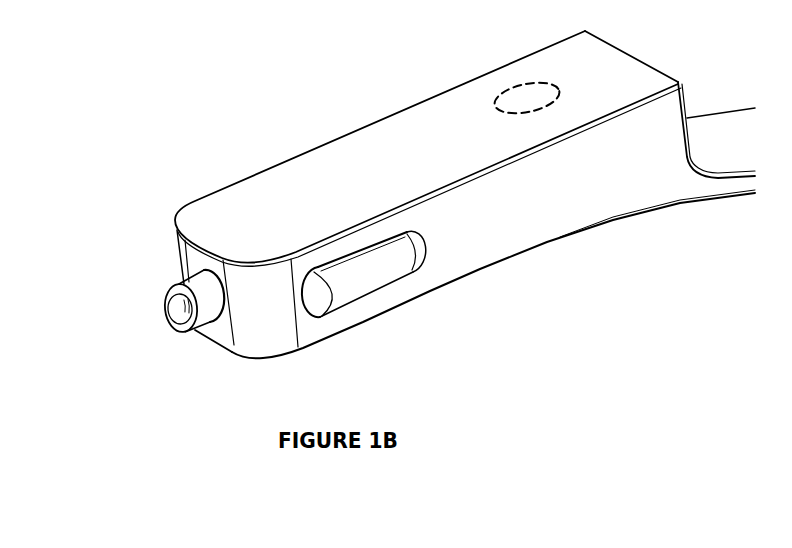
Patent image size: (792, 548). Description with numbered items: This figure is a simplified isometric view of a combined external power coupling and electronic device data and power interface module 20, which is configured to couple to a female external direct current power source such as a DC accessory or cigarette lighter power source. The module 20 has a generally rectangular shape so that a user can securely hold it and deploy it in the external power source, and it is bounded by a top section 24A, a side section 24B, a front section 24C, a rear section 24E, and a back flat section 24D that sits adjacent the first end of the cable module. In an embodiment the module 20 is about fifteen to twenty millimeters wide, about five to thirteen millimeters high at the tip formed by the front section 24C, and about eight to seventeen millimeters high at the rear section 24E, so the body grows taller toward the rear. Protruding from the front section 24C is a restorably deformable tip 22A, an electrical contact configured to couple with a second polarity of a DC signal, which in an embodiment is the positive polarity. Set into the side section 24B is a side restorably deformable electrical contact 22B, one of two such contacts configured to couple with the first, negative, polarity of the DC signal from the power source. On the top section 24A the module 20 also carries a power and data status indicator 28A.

The combined external PC and ED DPI module 20 is at (444, 193).
The restorably deformable tip 22A is at (176, 311).
The side restorably deformable electrical contact 22B is at (362, 285).
The top section 24A is at (345, 148).
The side section 24B is at (528, 235).
The front section 24C is at (222, 337).
The back flat section 24D is at (740, 108).
The rear section 24E is at (613, 45).
The power and data status indicator 28A is at (497, 109).